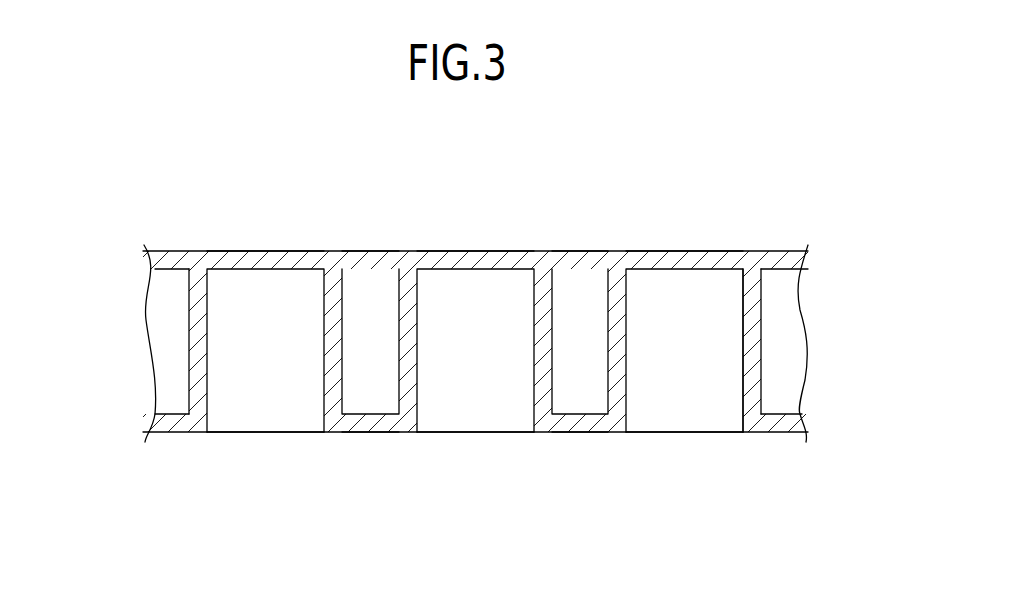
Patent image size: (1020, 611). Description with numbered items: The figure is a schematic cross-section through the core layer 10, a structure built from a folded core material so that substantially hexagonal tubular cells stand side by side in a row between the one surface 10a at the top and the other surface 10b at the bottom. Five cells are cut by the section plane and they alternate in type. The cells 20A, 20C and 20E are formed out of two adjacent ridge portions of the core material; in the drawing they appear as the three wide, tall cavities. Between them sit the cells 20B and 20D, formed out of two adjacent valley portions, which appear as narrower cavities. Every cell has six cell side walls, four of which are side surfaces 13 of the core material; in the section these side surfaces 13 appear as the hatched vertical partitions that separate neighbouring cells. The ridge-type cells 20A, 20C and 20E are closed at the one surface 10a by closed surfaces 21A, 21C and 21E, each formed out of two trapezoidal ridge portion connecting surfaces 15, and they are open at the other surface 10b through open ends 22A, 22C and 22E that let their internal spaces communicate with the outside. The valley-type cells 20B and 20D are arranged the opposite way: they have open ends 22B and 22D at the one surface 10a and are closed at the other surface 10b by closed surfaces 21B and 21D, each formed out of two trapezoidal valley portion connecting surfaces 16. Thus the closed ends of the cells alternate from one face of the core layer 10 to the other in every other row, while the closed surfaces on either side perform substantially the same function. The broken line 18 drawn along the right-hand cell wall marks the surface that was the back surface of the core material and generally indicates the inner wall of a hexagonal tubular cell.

The core layer 10 is at (795, 202).
The one surface 10a is at (788, 250).
The other surface 10b is at (777, 435).
The side surface 13 is at (762, 338).
The ridge portion connecting surface 15 is at (218, 250).
The valley portion connecting surface 16 is at (170, 435).
The broken line 18 is at (742, 302).
The cell 20A is at (243, 340).
The cell 20B is at (368, 280).
The cell 20C is at (480, 290).
The cell 20D is at (582, 282).
The cell 20E is at (692, 290).
The closed surface 21A is at (262, 248).
The closed surface 21B is at (367, 437).
The closed surface 21C is at (477, 248).
The closed surface 21D is at (575, 437).
The closed surface 21E is at (685, 248).
The open end 22A is at (268, 437).
The open end 22B is at (377, 248).
The open end 22C is at (472, 437).
The open end 22D is at (580, 248).
The open end 22E is at (688, 437).